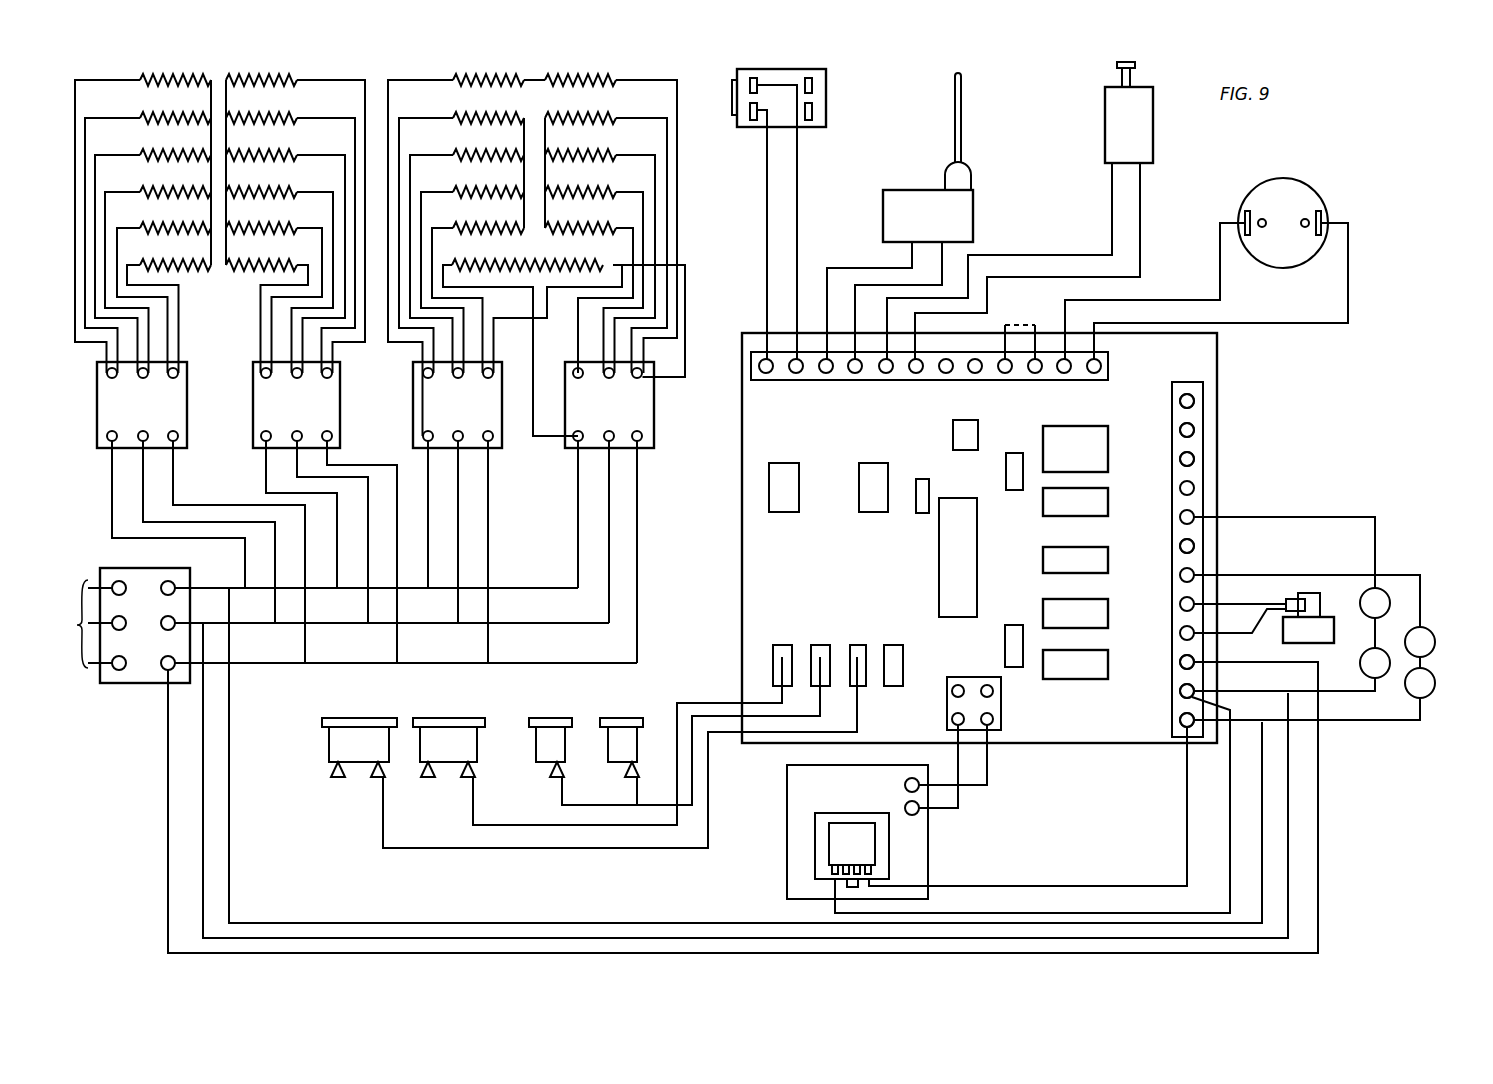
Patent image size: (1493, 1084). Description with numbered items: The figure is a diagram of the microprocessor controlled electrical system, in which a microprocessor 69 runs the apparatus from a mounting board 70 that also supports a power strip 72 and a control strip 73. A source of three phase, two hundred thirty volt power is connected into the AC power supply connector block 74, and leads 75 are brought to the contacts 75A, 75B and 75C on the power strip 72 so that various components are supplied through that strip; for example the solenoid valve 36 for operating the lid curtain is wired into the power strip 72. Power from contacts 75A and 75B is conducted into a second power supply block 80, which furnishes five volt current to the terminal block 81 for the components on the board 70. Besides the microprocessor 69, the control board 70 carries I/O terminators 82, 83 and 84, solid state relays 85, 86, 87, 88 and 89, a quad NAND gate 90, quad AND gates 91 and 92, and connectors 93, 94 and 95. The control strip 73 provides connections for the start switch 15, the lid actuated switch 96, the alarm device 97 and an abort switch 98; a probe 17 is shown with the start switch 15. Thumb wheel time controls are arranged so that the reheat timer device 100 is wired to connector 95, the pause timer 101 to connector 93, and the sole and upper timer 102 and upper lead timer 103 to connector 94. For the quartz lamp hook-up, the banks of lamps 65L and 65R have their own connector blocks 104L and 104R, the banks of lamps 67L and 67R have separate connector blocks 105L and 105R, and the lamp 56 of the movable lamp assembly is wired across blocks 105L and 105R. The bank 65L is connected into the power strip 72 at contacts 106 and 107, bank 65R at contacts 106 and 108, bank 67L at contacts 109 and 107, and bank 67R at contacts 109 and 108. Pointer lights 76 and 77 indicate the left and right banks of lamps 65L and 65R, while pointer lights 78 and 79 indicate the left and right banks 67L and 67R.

The left bank of lamps 65L is at (175, 143).
The right bank of lamps 65R is at (267, 143).
The left bank of lamps 67L is at (480, 143).
The right bank of lamps 67R is at (585, 143).
The lamp 56 is at (608, 266).
The connector block 104L is at (105, 412).
The connector block 104R is at (258, 427).
The connector block 105L is at (413, 408).
The connector block 105R is at (654, 423).
The AC power supply connector block 74 is at (131, 684).
The leads 75 is at (480, 912).
The contact 75A is at (1182, 723).
The contact 75B is at (1182, 691).
The contact 75C is at (1182, 662).
The abort switch 98 is at (812, 76).
The temperature probe 17 is at (963, 110).
The start switch 15 is at (906, 192).
The lid actuated switch 96 is at (1105, 120).
The alarm device 97 is at (1272, 180).
The mounting board 70 is at (1217, 356).
The power strip 72 is at (1177, 382).
The control strip 73 is at (751, 363).
The contact 109 is at (1194, 401).
The contact 106 is at (1194, 430).
The contact 108 is at (1194, 459).
The contact 107 is at (1194, 546).
The I/O terminator 84 is at (958, 432).
The I/O terminator 82 is at (785, 506).
The I/O terminator 83 is at (873, 506).
The quad AND gate 92 is at (1006, 483).
The microprocessor 69 is at (942, 560).
The solid state relay 85 is at (1075, 449).
The solid state relay 86 is at (1075, 502).
The solid state relay 87 is at (1075, 560).
The solid state relay 88 is at (1075, 613).
The solid state relay 89 is at (1075, 664).
The connector 93 is at (790, 648).
The connector 94 is at (833, 648).
The connector 95 is at (878, 630).
The quad NAND gate 90 is at (923, 630).
The quad AND gate 91 is at (1010, 641).
The terminal block 81 is at (947, 696).
The second power supply block 80 is at (787, 813).
The solenoid valve 36 is at (1308, 618).
The pointer light 79 is at (1386, 594).
The pointer light 78 is at (1385, 678).
The pointer light 77 is at (1450, 617).
The pointer light 76 is at (1426, 697).
The reheat timer device 100 is at (375, 720).
The pause timer 101 is at (475, 720).
The sole and upper timer 102 is at (560, 720).
The upper lead timer 103 is at (640, 720).